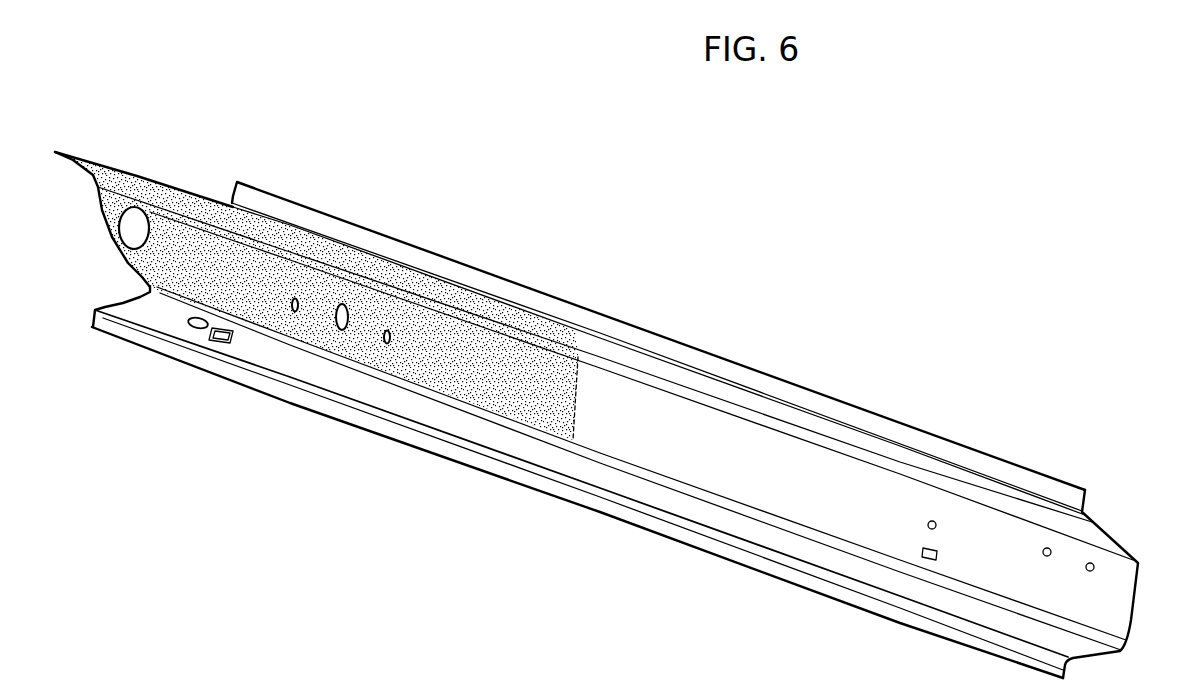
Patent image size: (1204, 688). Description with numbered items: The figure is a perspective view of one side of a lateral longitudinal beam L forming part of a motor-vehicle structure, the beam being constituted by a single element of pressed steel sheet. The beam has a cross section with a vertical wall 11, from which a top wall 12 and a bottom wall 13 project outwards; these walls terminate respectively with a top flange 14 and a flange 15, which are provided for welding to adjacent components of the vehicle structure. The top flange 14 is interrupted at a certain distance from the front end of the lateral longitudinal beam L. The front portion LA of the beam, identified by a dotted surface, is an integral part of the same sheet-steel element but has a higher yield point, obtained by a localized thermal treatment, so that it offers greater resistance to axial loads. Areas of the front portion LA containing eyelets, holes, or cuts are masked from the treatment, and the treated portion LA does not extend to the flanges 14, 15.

The lateral longitudinal beam L is at (616, 268).
The front portion LA is at (167, 197).
The vertical wall 11 is at (1107, 600).
The top wall 12 is at (895, 452).
The bottom wall 13 is at (864, 576).
The top flange 14 is at (692, 352).
The top flange 15 is at (697, 540).